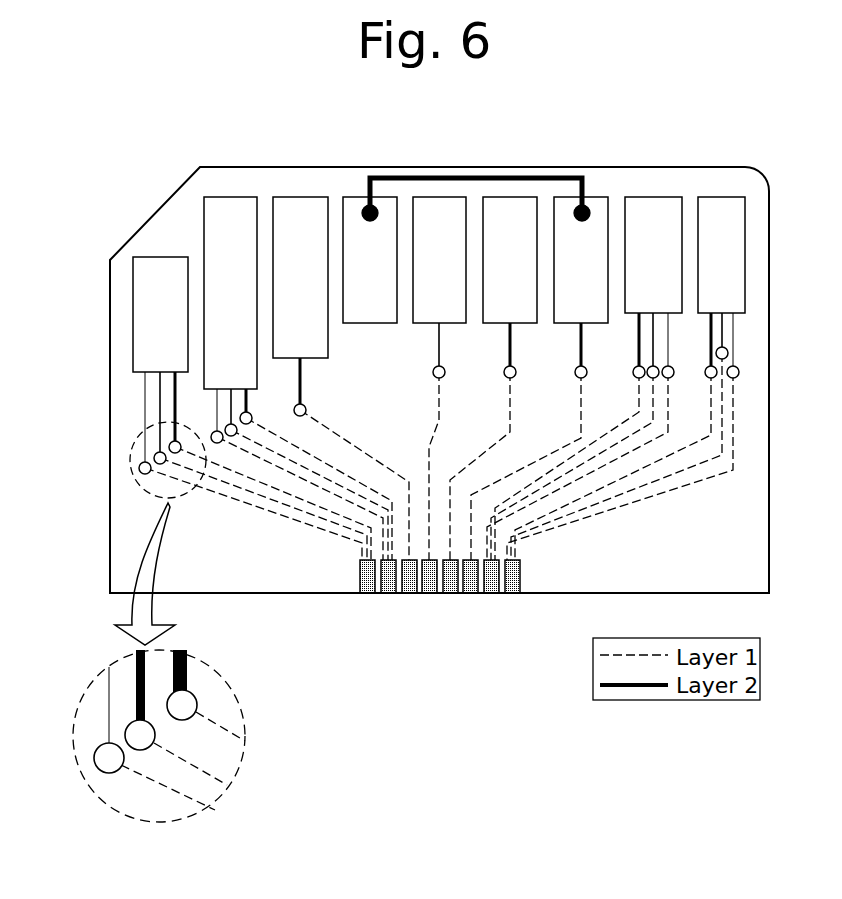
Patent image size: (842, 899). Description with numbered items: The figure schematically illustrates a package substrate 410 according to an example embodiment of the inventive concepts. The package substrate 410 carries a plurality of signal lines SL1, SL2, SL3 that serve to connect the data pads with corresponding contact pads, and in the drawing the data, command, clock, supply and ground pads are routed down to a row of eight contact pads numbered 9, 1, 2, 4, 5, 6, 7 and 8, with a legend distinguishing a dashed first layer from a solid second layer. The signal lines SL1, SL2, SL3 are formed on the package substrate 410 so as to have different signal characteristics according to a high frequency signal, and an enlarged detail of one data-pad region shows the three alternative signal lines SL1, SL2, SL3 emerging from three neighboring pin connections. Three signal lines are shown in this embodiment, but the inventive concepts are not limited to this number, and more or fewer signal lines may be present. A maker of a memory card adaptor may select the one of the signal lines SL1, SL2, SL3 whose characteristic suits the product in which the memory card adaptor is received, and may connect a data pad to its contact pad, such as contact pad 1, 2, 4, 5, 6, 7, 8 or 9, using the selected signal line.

The package substrate 410 is at (751, 124).
The signal line SL1 is at (177, 792).
The signal line SL2 is at (193, 768).
The signal line SL3 is at (220, 735).
The pad 1 is at (388, 591).
The pad 2 is at (409, 591).
The pad 4 is at (429, 591).
The pad 5 is at (450, 591).
The pad 6 is at (470, 591).
The pad 7 is at (491, 591).
The pad 8 is at (512, 591).
The pad 9 is at (367, 591).